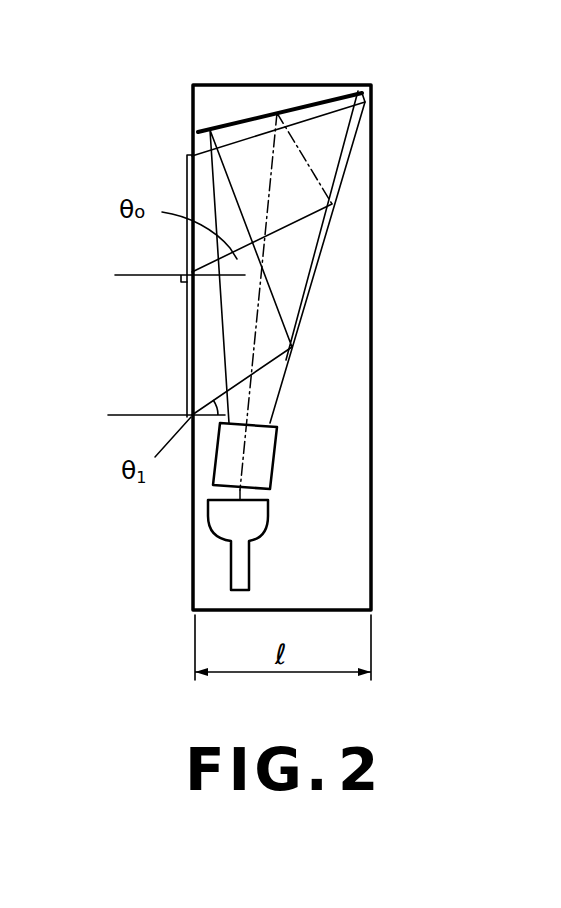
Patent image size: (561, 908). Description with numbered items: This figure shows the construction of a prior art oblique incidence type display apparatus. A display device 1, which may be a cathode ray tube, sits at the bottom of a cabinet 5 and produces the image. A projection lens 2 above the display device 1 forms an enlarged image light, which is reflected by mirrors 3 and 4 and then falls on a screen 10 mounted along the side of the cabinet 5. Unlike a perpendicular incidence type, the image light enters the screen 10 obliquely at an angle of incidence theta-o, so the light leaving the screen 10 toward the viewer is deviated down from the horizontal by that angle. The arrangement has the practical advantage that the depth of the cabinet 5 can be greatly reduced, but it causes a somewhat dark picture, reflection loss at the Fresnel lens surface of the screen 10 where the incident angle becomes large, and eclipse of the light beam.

The display device 1 is at (261, 537).
The projection lens 2 is at (272, 463).
The mirror 3 is at (312, 273).
The mirror 4 is at (307, 104).
The cabinet 5 is at (372, 220).
The screen 10 is at (188, 344).